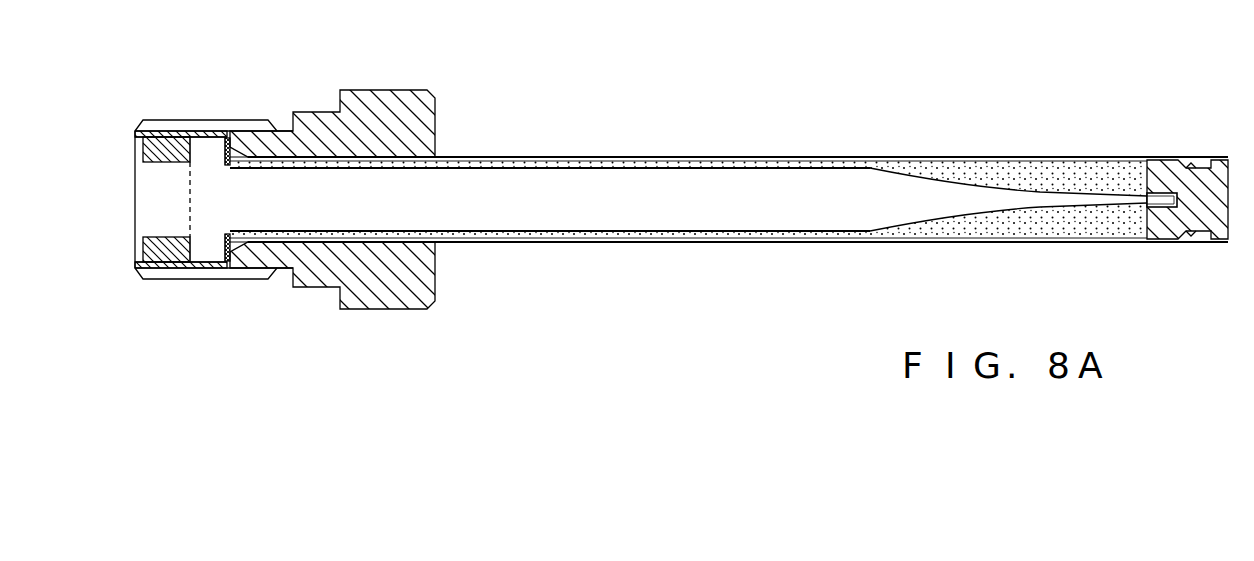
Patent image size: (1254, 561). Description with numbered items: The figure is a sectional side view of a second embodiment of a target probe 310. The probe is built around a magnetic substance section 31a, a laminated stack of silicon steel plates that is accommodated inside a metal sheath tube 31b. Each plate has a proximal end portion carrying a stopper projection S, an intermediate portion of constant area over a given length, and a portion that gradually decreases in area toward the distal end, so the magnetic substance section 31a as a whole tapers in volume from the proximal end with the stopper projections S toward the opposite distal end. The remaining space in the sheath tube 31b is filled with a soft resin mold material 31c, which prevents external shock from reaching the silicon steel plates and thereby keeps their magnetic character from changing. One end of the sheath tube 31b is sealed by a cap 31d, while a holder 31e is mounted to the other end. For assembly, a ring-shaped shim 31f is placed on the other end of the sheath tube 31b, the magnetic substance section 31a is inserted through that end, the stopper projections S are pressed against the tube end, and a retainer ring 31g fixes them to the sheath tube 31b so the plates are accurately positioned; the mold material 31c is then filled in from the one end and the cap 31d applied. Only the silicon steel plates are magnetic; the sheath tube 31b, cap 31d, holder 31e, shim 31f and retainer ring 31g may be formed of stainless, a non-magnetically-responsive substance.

The target probe 310 is at (848, 109).
The magnetic substance section 31a is at (745, 217).
The sheath tube 31b is at (972, 158).
The soft resin mold material 31c is at (997, 228).
The cap 31d is at (1163, 230).
The holder 31e is at (407, 102).
The shim 31f is at (227, 262).
The retainer ring 31g is at (161, 143).
The stopper projection S is at (210, 150).